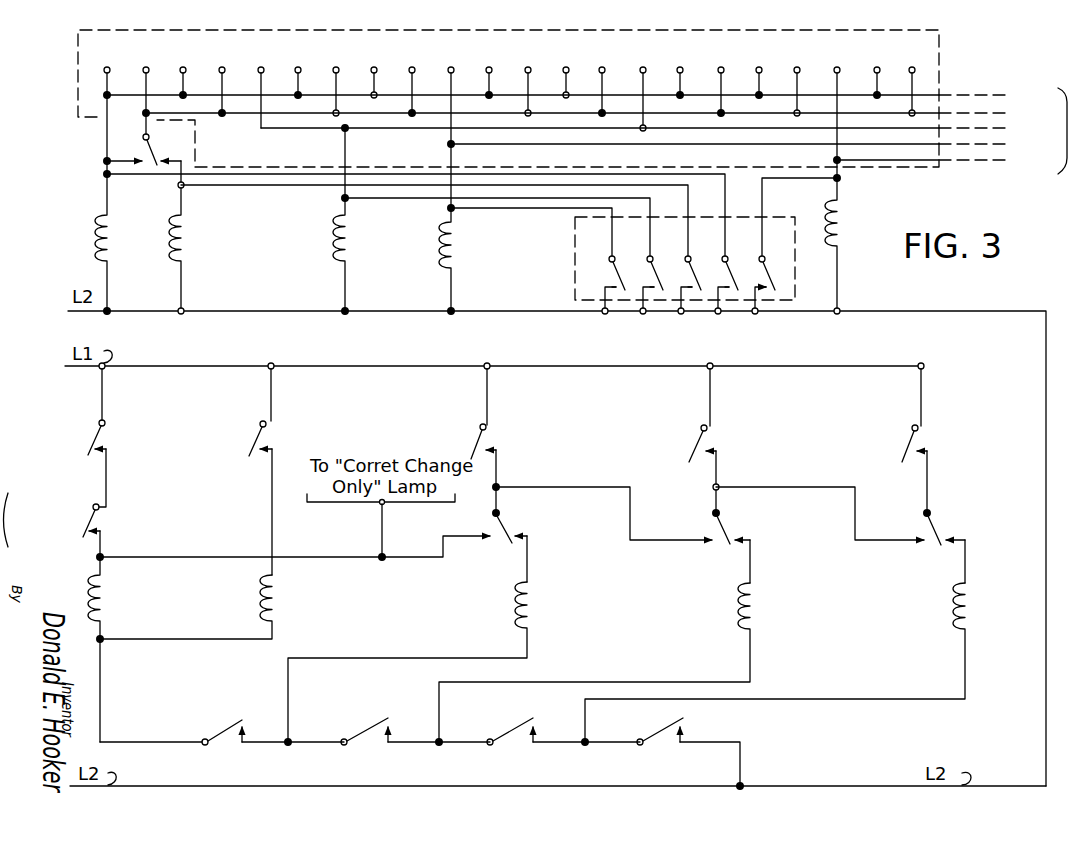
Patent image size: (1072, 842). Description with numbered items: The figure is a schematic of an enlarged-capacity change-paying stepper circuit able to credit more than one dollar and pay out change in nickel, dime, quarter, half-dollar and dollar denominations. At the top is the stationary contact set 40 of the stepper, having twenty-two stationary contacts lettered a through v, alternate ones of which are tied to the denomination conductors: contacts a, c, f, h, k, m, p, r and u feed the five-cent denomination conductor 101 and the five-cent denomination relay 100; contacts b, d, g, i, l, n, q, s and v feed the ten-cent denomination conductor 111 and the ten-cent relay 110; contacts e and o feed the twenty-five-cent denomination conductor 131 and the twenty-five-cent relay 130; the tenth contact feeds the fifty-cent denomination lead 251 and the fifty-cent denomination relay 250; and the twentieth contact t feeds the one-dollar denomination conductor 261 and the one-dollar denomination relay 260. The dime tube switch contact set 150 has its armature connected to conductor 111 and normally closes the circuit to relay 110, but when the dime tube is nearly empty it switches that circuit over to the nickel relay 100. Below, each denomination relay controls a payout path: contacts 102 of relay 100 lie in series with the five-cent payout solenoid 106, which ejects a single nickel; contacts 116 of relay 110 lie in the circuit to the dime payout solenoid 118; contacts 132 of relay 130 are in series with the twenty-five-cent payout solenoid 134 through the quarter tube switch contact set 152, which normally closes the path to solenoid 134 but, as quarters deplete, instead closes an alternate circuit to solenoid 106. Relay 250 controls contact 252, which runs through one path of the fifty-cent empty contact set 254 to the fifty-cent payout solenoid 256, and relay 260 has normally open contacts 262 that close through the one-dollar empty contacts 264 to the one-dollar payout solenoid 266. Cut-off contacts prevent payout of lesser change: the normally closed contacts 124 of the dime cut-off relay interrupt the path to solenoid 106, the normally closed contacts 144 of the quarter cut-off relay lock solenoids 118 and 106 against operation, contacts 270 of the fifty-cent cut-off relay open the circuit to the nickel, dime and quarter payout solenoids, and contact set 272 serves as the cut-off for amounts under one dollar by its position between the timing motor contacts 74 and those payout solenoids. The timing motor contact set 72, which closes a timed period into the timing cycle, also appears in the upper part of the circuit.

The stationary contact set 40 is at (85, 100).
The timing motor contact set 72 is at (791, 205).
The timing motor contact set 74 is at (676, 732).
The 5¢ denomination relay 100 is at (131, 239).
The 5¢ denomination conductor 101 is at (1050, 97).
The first set of contacts 102 is at (95, 447).
The 5¢ payout solenoid 106 is at (104, 600).
The 10¢ relay 110 is at (205, 239).
The 10¢ denomination conductor 111 is at (1050, 113).
The contacts 116 is at (259, 447).
The dime payout solenoid 118 is at (280, 620).
The normally closed contacts 124 is at (93, 531).
The 25¢ denomination relay 130 is at (369, 239).
The 25¢ denomination conductor 131 is at (1050, 129).
The first set of contacts 132 is at (478, 447).
The 25¢ payout solenoid 134 is at (560, 614).
The normally closed contact set 144 is at (237, 731).
The two-position contact set 150 is at (147, 153).
The two-position contact set 152 is at (503, 540).
The 50¢ denomination relay 250 is at (478, 239).
The 50¢ denomination lead 251 is at (1050, 145).
The contact 252 is at (701, 450).
The 50¢ empty contact set 254 is at (731, 545).
The 50¢ payout solenoid 256 is at (784, 614).
The $1.00 denomination relay 260 is at (848, 233).
The $1.00 denomination conductor 261 is at (1050, 161).
The contacts 262 is at (913, 450).
The $1.00 empty contacts 264 is at (935, 545).
The $1.00 payout solenoid 266 is at (998, 614).
The contacts 270 is at (380, 731).
The contact set 272 is at (527, 732).